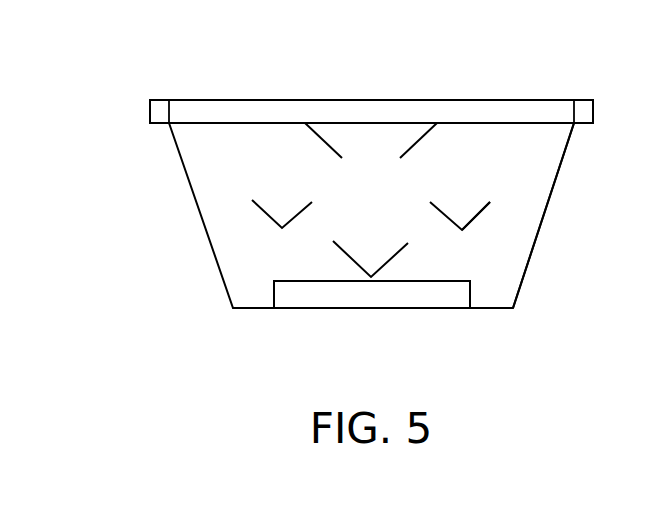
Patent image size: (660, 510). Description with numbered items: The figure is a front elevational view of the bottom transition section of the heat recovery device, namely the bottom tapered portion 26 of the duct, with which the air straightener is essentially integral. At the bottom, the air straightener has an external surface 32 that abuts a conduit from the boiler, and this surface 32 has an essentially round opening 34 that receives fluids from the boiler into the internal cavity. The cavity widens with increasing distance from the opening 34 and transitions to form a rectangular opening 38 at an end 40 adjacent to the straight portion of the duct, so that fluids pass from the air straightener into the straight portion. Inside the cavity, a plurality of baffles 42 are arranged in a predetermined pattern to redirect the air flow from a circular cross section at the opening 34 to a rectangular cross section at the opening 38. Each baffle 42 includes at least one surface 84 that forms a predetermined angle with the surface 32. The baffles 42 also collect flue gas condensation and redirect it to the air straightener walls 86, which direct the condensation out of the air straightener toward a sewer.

The bottom tapered portion 26 is at (168, 242).
The external surface 32 is at (240, 310).
The round opening 34 is at (292, 310).
The rectangular opening 38 is at (200, 108).
The end 40 is at (553, 100).
The baffles 42 is at (267, 212).
The surface 84 is at (477, 216).
The air straightener walls 86 is at (549, 202).